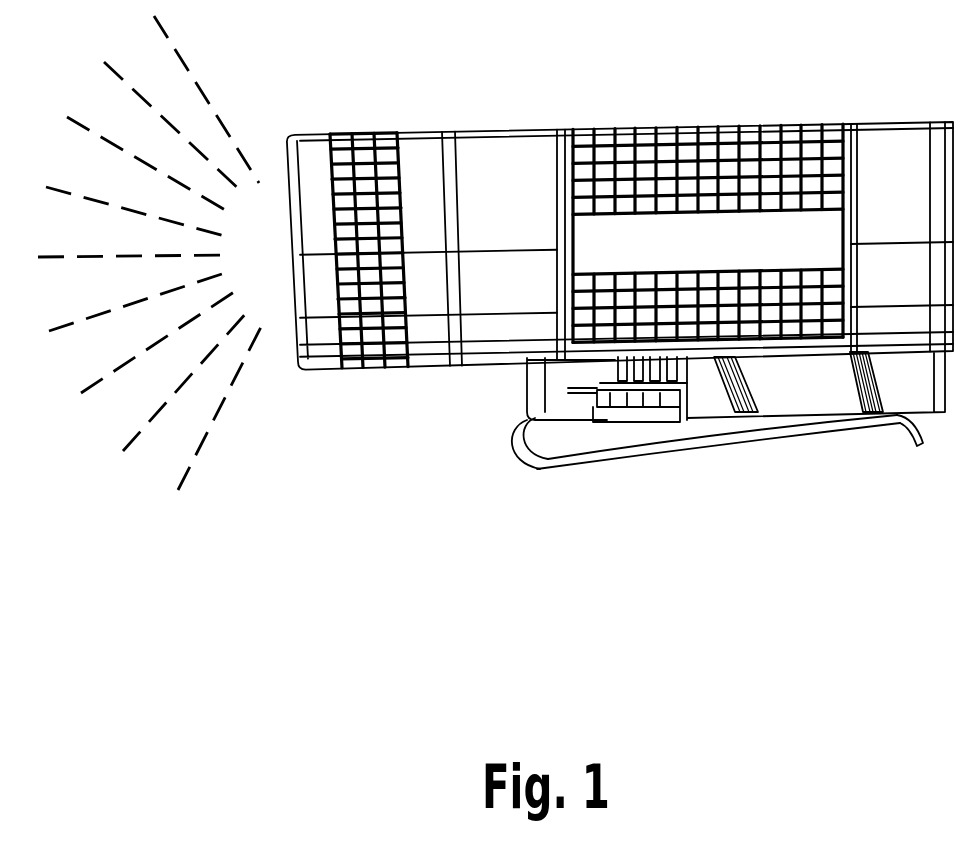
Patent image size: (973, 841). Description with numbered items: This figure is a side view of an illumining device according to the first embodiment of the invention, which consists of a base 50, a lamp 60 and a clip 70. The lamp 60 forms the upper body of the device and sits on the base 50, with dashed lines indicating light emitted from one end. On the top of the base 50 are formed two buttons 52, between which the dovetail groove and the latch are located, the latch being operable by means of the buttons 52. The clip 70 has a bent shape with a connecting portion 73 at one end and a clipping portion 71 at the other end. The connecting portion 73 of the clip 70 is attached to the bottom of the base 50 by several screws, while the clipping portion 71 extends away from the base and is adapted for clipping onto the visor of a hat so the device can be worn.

The base 50 is at (847, 378).
The buttons 52 is at (625, 407).
The lamp 60 is at (603, 127).
The clip 70 is at (747, 440).
The clipping portion 71 is at (547, 437).
The connecting portion 73 is at (632, 414).